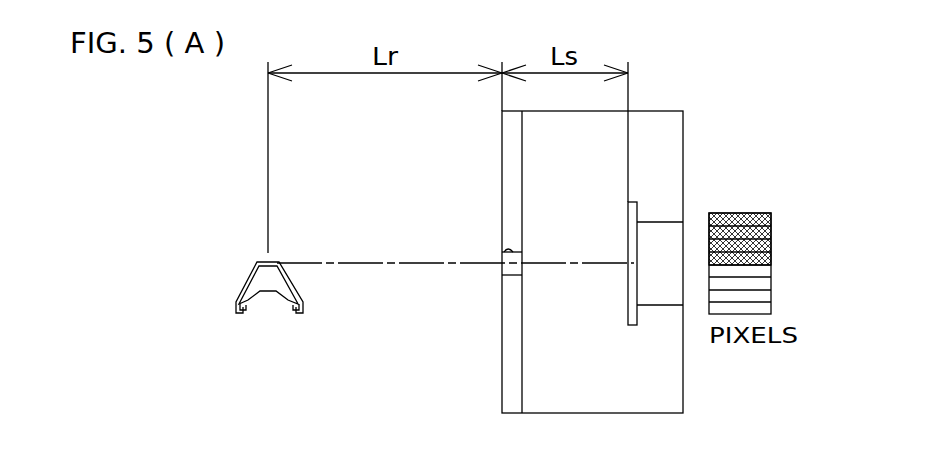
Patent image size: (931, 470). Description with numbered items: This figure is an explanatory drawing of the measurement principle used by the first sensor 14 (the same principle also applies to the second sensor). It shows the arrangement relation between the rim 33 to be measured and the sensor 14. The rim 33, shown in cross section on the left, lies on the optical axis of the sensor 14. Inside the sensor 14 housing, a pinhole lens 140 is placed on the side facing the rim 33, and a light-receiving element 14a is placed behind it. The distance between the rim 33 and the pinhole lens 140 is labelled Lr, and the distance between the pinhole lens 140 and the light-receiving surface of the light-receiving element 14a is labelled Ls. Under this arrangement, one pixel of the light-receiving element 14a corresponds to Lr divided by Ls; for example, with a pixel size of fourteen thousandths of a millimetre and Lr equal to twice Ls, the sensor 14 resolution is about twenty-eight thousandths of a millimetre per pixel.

The first sensor 14 is at (684, 127).
The light-receiving element 14a is at (656, 222).
The pinhole lens 140 is at (509, 251).
The rim 33 is at (256, 268).